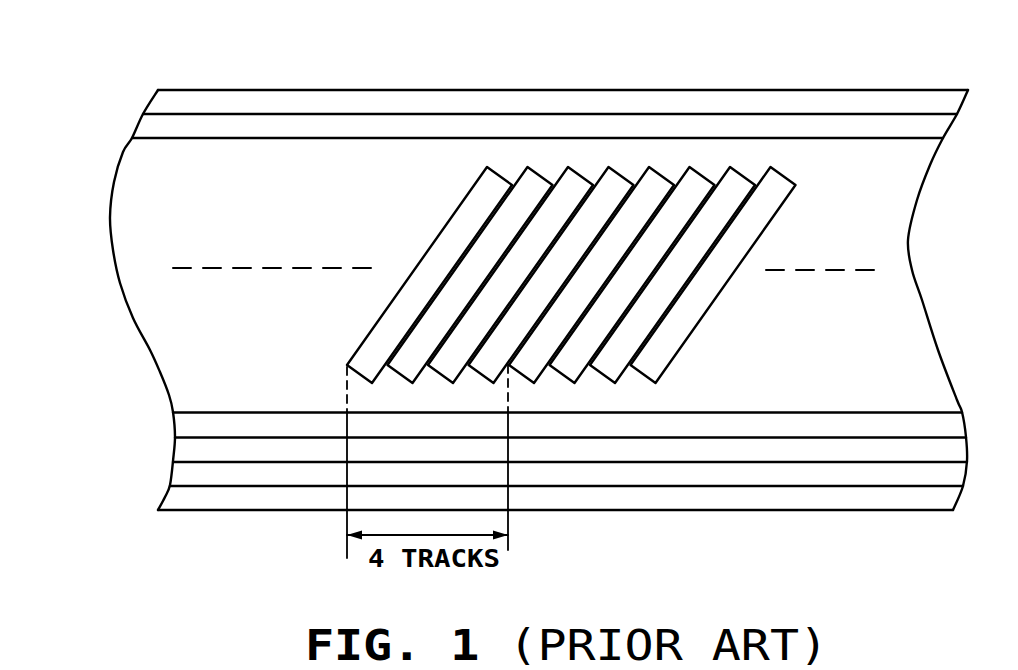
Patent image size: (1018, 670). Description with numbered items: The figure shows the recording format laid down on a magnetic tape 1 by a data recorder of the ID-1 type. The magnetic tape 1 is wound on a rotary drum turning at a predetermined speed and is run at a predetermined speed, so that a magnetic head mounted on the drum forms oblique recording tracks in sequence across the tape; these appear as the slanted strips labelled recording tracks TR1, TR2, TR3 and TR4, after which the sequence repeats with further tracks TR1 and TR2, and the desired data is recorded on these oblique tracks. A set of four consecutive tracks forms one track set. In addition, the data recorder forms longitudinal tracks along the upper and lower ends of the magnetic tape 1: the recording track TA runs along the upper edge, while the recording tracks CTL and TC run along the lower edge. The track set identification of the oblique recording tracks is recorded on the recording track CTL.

The magnetic tape 1 is at (897, 247).
The recording track TA is at (925, 137).
The recording track CTL is at (779, 423).
The recording track TC is at (782, 475).
The recording track TR1 is at (496, 170).
The recording track TR2 is at (543, 177).
The recording track TR3 is at (597, 173).
The recording track TR4 is at (627, 177).